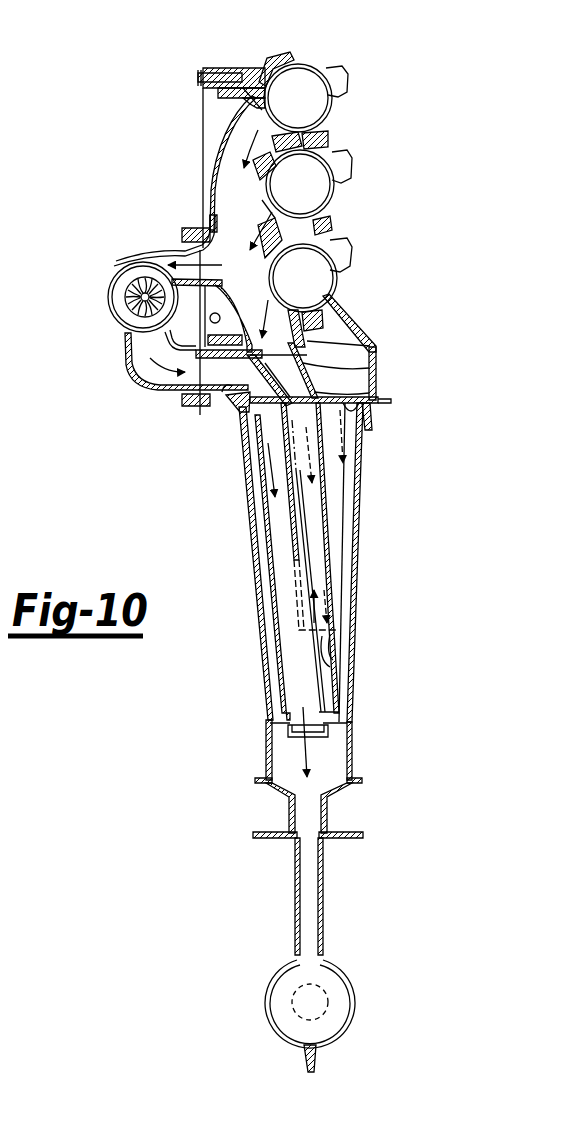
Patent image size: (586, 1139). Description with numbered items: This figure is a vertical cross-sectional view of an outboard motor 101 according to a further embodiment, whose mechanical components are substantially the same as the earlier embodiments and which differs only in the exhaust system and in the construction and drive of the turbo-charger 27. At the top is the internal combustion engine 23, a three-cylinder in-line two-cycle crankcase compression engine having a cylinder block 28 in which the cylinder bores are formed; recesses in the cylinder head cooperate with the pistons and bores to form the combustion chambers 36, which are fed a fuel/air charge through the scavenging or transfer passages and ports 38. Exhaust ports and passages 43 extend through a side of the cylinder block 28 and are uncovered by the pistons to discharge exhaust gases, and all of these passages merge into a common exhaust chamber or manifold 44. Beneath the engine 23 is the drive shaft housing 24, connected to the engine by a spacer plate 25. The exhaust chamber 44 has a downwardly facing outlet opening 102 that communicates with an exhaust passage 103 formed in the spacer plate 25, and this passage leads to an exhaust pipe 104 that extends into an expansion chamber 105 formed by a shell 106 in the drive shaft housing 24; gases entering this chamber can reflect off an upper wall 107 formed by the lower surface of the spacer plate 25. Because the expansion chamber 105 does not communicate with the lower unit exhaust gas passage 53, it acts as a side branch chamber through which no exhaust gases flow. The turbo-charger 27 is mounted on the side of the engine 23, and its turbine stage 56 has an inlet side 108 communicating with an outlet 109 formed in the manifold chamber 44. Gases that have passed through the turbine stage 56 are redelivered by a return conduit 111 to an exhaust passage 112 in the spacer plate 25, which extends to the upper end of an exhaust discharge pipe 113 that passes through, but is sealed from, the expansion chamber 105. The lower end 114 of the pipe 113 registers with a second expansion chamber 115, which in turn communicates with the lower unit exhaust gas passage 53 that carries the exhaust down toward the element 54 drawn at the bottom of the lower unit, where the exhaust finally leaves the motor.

The internal combustion engine 23 is at (216, 147).
The drive shaft housing 24 is at (357, 527).
The spacer plate 25 is at (380, 384).
The turbo-charger 27 is at (122, 255).
The cylinder block 28 is at (335, 112).
The combustion chambers 36 is at (300, 88).
The scavenging or transfer passages and ports 38 is at (285, 66).
The exhaust ports and passages 43 is at (243, 88).
The exhaust chamber or manifold 44 is at (205, 224).
The lower unit exhaust gas passage 53 is at (312, 908).
The ball chamber 54 is at (328, 1000).
The turbine stage 56 is at (118, 303).
The outboard motor 101 is at (408, 278).
The outlet opening 102 is at (365, 368).
The exhaust passage 103 is at (372, 396).
The exhaust pipe 104 is at (322, 490).
The expansion chamber 105 is at (333, 562).
The shell 106 is at (344, 688).
The upper wall 107 is at (362, 418).
The inlet side 108 is at (175, 250).
The outlet 109 is at (120, 260).
The return conduit 111 is at (145, 387).
The exhaust passage 112 is at (235, 412).
The exhaust discharge pipe 113 is at (272, 640).
The lower end 114 is at (297, 726).
The expansion chamber 115 is at (322, 762).